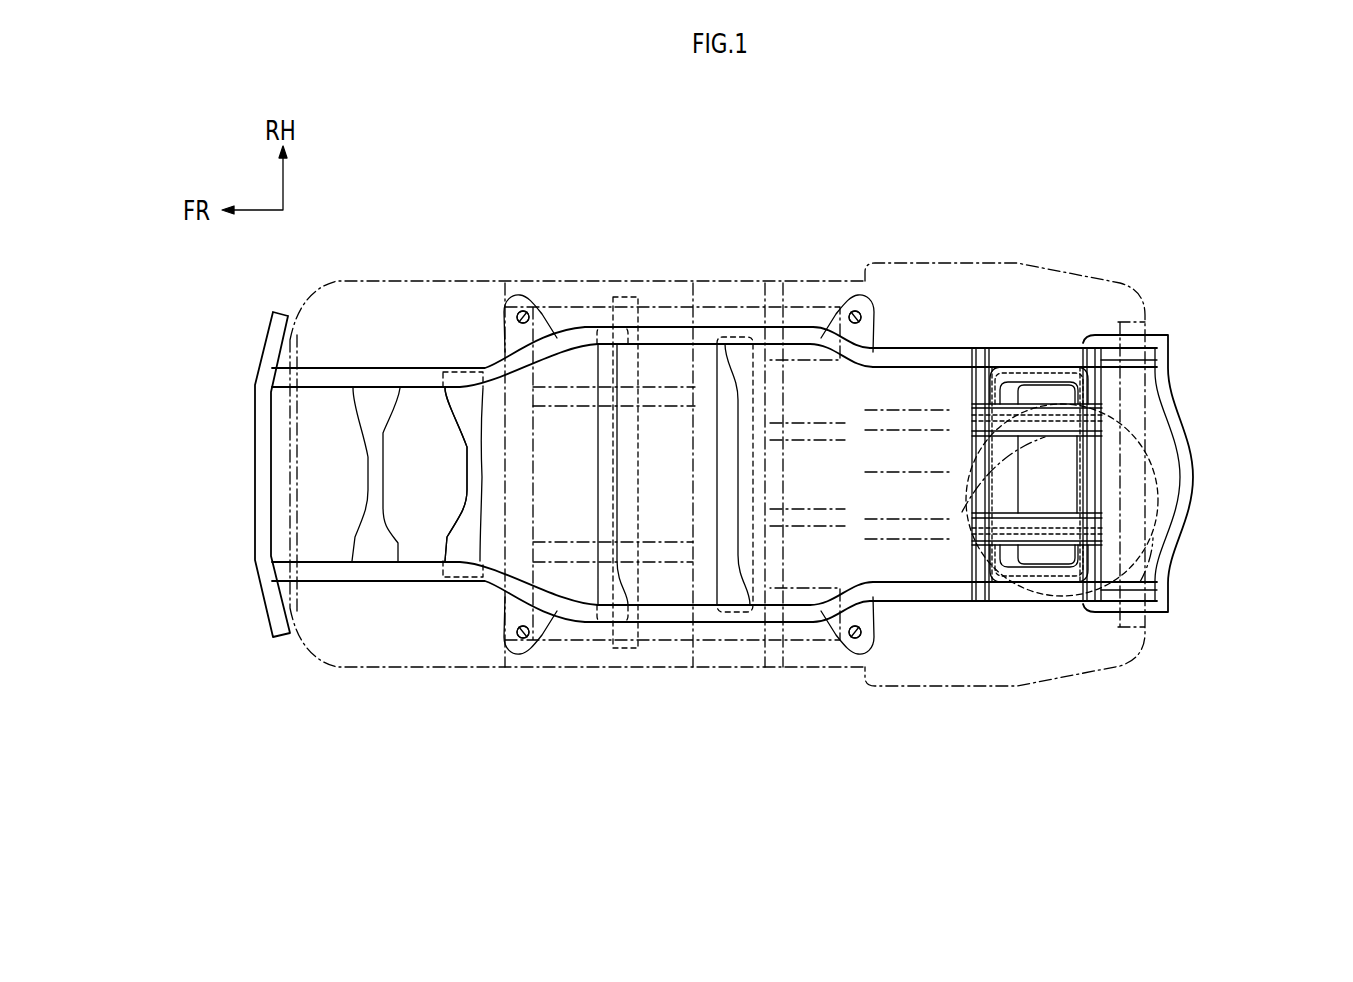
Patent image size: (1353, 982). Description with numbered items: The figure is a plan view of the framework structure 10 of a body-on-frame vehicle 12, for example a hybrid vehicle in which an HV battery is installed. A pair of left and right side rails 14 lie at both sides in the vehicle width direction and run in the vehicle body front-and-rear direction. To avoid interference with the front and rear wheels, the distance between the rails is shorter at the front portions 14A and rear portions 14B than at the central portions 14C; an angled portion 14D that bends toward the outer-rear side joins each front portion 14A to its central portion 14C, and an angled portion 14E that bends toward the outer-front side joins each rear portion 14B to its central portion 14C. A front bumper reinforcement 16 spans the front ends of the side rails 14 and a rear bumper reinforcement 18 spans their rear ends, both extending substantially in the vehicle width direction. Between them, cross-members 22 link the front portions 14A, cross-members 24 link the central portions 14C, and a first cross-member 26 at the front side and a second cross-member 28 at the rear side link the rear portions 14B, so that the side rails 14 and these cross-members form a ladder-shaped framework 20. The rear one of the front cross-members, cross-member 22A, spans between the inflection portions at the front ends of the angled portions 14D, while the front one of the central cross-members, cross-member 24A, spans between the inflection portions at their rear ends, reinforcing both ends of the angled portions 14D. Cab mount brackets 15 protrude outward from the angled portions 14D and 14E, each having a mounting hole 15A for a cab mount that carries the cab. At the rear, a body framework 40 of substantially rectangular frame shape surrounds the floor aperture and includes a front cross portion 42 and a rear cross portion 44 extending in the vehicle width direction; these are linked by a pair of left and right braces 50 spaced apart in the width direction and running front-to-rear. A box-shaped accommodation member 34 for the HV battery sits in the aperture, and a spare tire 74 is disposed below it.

The framework structure 10 is at (1051, 333).
The body-on-frame vehicle 12 is at (791, 281).
The side rails 14 is at (661, 319).
The front portions 14A is at (417, 563).
The rear portions 14B is at (947, 345).
The central portions 14C is at (707, 333).
The angled portion 14D is at (526, 360).
The angled portion 14E is at (836, 322).
The cab mount brackets 15 is at (516, 294).
The mounting holes 15A is at (536, 300).
The front bumper reinforcement 16 is at (258, 465).
The rear bumper reinforcement 18 is at (1197, 477).
The framework 20 is at (365, 596).
The cross-members 22 is at (367, 477).
The cross-member 22A is at (473, 487).
The cross-members 24 is at (742, 465).
The cross-member 24A is at (600, 440).
The first cross-member 26 is at (962, 512).
The second cross-member 28 is at (1100, 470).
The accommodation member 34 is at (1050, 596).
The body framework 40 is at (1113, 366).
The front cross portion 42 is at (968, 374).
The rear cross portion 44 is at (1104, 405).
The braces 50 is at (1035, 420).
The spare tire 74 is at (1166, 548).